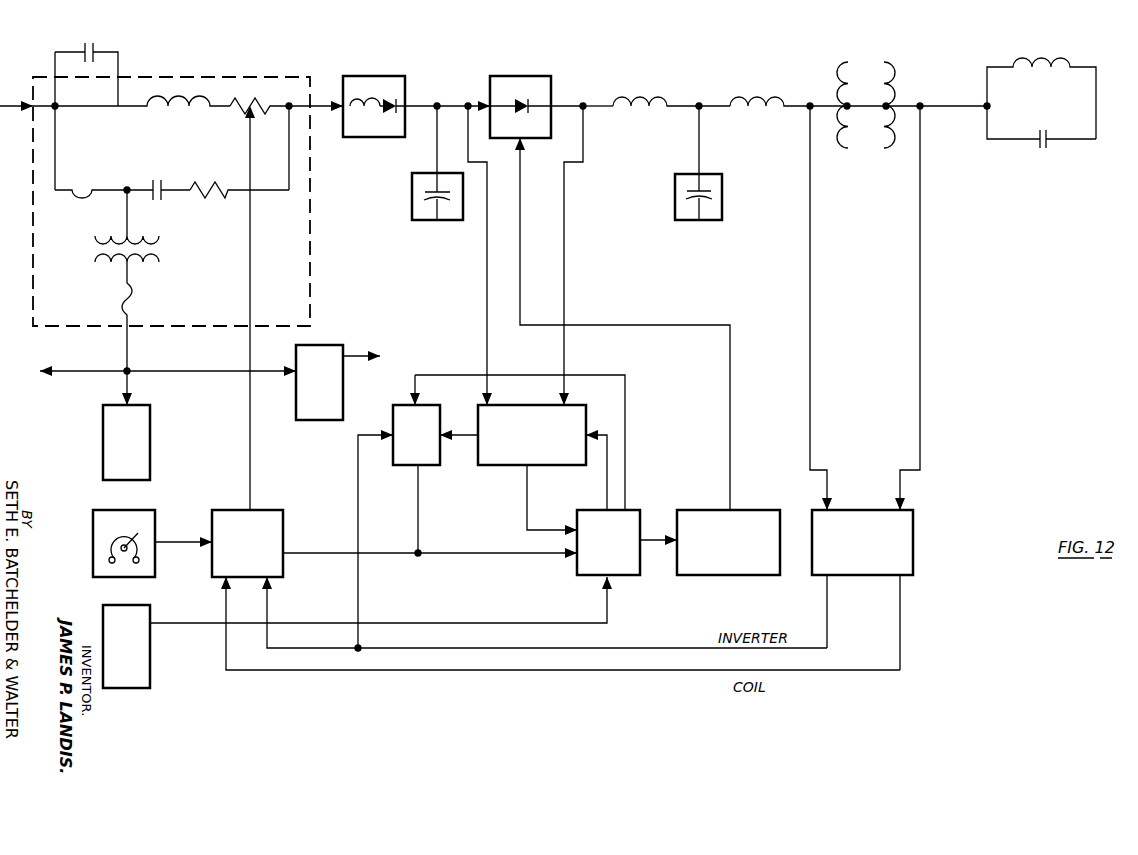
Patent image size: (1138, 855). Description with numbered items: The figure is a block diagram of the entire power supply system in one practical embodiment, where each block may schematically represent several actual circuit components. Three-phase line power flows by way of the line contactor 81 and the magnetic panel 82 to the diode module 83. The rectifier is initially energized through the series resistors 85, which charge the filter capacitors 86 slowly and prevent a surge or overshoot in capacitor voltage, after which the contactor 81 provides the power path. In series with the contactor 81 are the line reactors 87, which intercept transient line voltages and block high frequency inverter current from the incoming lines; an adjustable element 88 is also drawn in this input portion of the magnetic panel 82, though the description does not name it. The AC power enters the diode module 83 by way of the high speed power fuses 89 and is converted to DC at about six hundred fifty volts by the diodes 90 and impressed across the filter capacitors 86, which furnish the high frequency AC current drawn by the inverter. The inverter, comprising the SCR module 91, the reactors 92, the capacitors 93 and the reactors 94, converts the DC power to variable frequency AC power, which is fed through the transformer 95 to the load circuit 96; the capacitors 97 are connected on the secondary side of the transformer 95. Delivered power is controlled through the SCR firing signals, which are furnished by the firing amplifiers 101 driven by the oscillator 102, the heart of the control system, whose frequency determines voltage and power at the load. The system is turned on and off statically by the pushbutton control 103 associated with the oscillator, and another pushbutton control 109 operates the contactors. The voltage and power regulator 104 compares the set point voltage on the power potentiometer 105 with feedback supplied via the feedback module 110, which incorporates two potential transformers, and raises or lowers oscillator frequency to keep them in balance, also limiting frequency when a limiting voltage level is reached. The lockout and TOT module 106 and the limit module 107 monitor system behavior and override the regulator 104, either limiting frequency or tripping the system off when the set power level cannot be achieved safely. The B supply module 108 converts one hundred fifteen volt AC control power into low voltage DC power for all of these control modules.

The line contactor 81 is at (86, 52).
The magnetic panel 82 is at (250, 77).
The diode module 83 is at (350, 137).
The series resistors 85 is at (208, 182).
The filter capacitors 86 is at (412, 190).
The line reactors 87 is at (190, 108).
The variable resistor 88 is at (266, 115).
The high speed power fuses 89 is at (151, 181).
The diodes 90 is at (390, 96).
The SCR module 91 is at (522, 76).
The reactors 92 is at (625, 102).
The capacitors 93 is at (722, 186).
The reactors 94 is at (753, 102).
The transformer 95 is at (854, 64).
The load circuit 96 is at (987, 91).
The capacitors 97 is at (1038, 148).
The firing amplifiers 101 is at (758, 510).
The oscillator 102 is at (640, 510).
The pushbutton control 103 is at (150, 663).
The voltage and power regulator 104 is at (283, 516).
The power potentiometer 105 is at (155, 516).
The lockout and TOT module 106 is at (534, 405).
The limit module 107 is at (392, 405).
The B supply module 108 is at (338, 345).
The pushbutton control 109 is at (150, 422).
The feedback module 110 is at (915, 512).